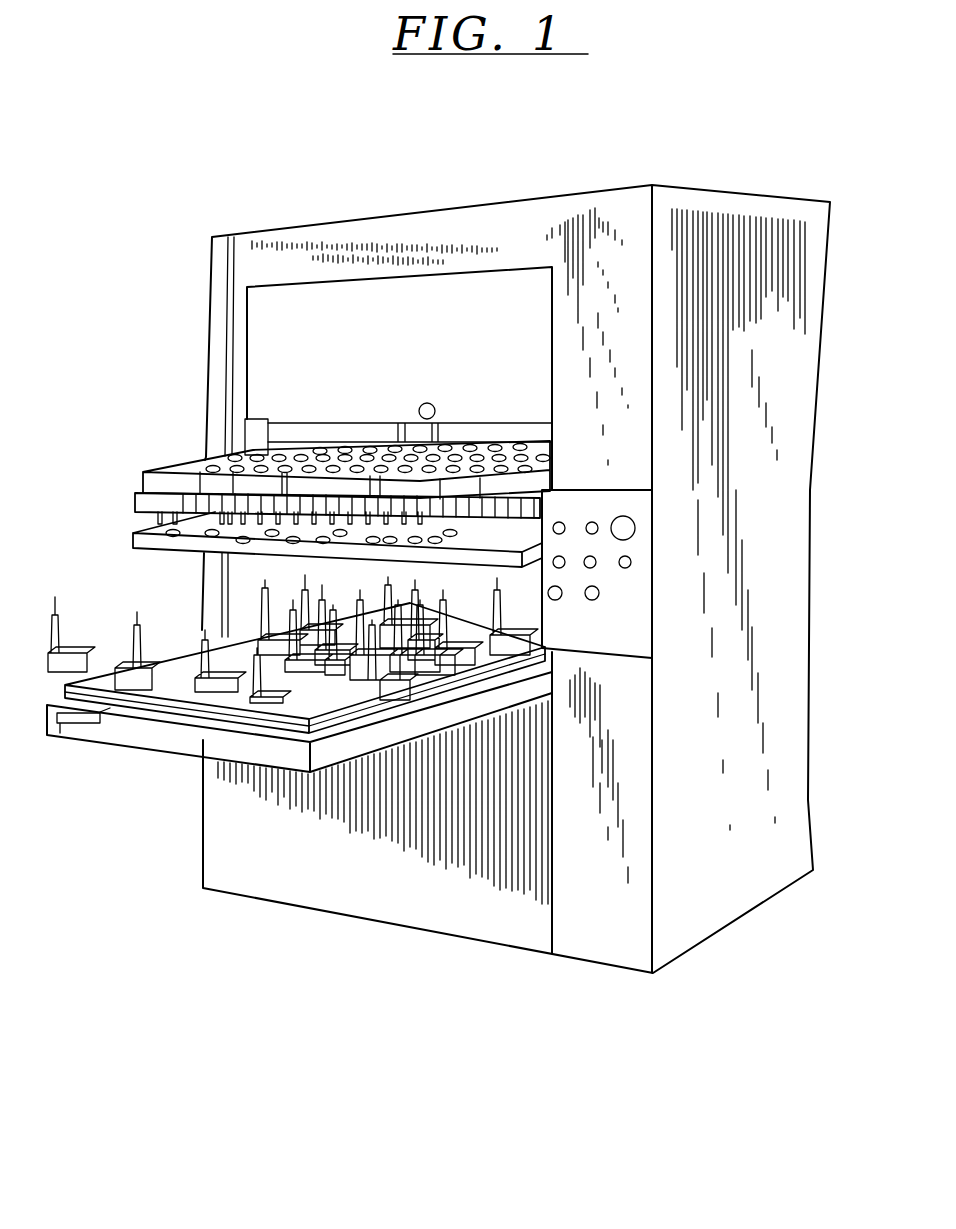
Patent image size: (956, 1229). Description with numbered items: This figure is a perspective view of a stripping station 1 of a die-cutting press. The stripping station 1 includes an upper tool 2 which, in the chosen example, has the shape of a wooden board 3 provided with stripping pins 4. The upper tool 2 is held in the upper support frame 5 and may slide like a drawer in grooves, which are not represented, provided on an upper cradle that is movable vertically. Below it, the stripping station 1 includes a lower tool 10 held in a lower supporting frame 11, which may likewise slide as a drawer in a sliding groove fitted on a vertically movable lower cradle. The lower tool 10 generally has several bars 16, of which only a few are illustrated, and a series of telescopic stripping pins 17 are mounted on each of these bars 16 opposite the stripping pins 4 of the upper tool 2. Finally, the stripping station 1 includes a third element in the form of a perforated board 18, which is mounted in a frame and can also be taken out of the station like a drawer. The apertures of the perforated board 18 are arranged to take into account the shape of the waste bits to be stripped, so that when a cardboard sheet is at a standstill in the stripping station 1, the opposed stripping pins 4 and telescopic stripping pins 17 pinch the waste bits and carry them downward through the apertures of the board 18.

The stripping station 1 is at (645, 158).
The upper tool 2 is at (122, 521).
The wooden board 3 is at (135, 500).
The stripping pins 4 is at (150, 517).
The upper support frame 5 is at (182, 463).
The lower tool 10 is at (154, 800).
The lower supporting frame 11 is at (385, 690).
The bars 16 is at (330, 712).
The telescopic stripping pins 17 is at (50, 637).
The perforated board 18 is at (510, 568).